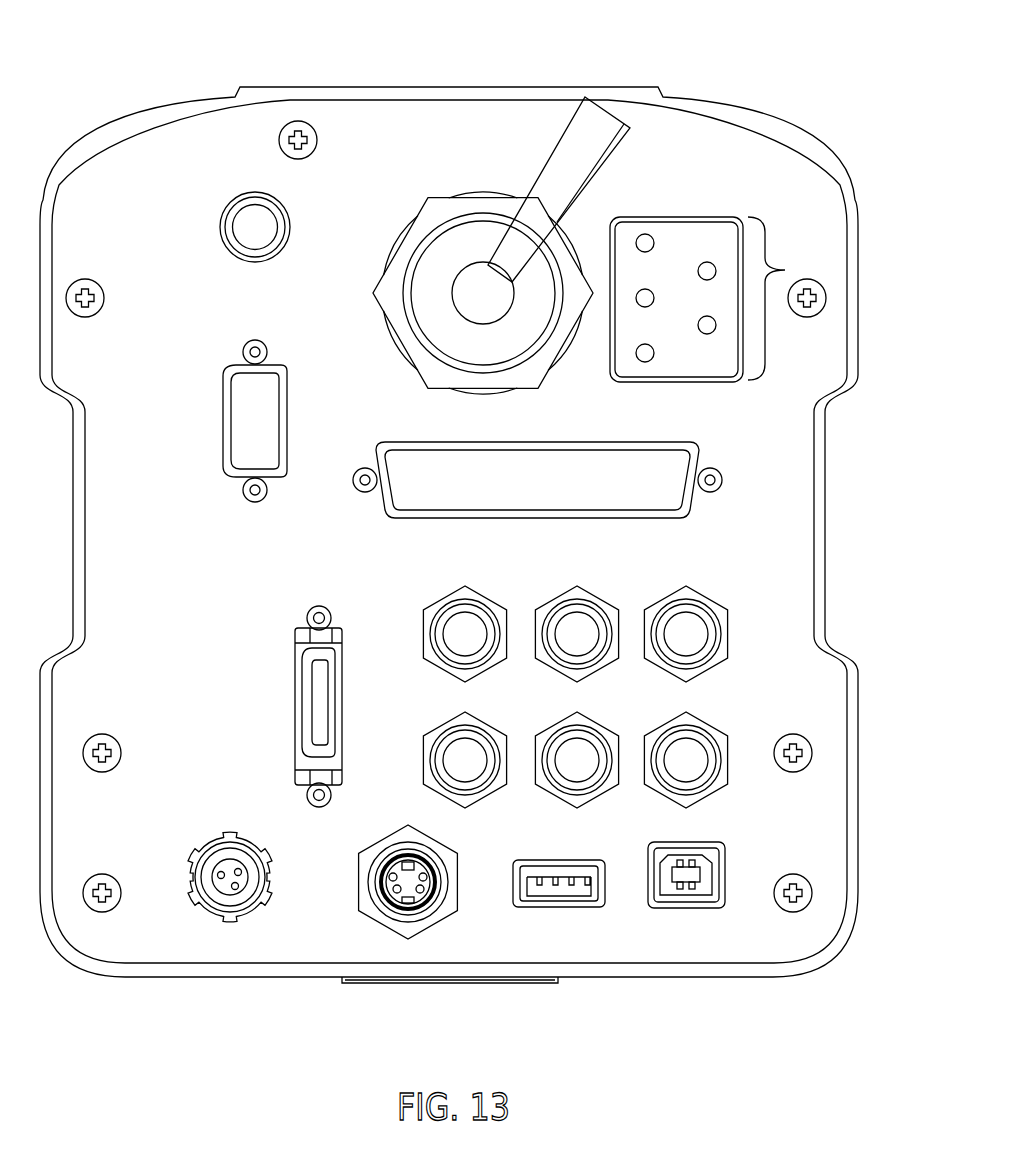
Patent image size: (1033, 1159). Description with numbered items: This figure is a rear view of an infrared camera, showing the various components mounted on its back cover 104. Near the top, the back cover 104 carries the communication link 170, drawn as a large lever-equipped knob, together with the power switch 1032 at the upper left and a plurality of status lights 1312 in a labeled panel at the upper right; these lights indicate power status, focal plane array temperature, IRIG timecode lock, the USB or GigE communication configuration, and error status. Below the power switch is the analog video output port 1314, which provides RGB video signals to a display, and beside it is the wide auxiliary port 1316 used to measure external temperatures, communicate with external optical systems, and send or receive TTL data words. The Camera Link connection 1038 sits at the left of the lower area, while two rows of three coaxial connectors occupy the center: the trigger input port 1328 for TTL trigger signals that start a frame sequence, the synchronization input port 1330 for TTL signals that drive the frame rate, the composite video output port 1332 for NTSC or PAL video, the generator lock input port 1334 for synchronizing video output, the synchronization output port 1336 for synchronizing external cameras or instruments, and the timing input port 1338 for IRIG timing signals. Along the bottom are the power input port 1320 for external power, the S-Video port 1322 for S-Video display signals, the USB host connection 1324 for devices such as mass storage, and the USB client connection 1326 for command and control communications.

The back cover 104 is at (277, 87).
The power switch 1032 is at (225, 227).
The communication link 170 is at (478, 285).
The status lights 1312 is at (785, 271).
The analog video output port 1314 is at (227, 417).
The auxiliary port 1316 is at (655, 447).
The trigger input port 1328 is at (485, 590).
The synchronization input port 1330 is at (597, 590).
The composite video output port 1332 is at (705, 592).
The Camera Link connection 1038 is at (300, 718).
The generator lock input port 1334 is at (484, 796).
The synchronization output port 1336 is at (596, 796).
The timing input port 1338 is at (702, 796).
The power input port 1320 is at (215, 845).
The S-Video port 1322 is at (382, 904).
The USB host connection 1324 is at (562, 912).
The USB client connection 1326 is at (693, 900).